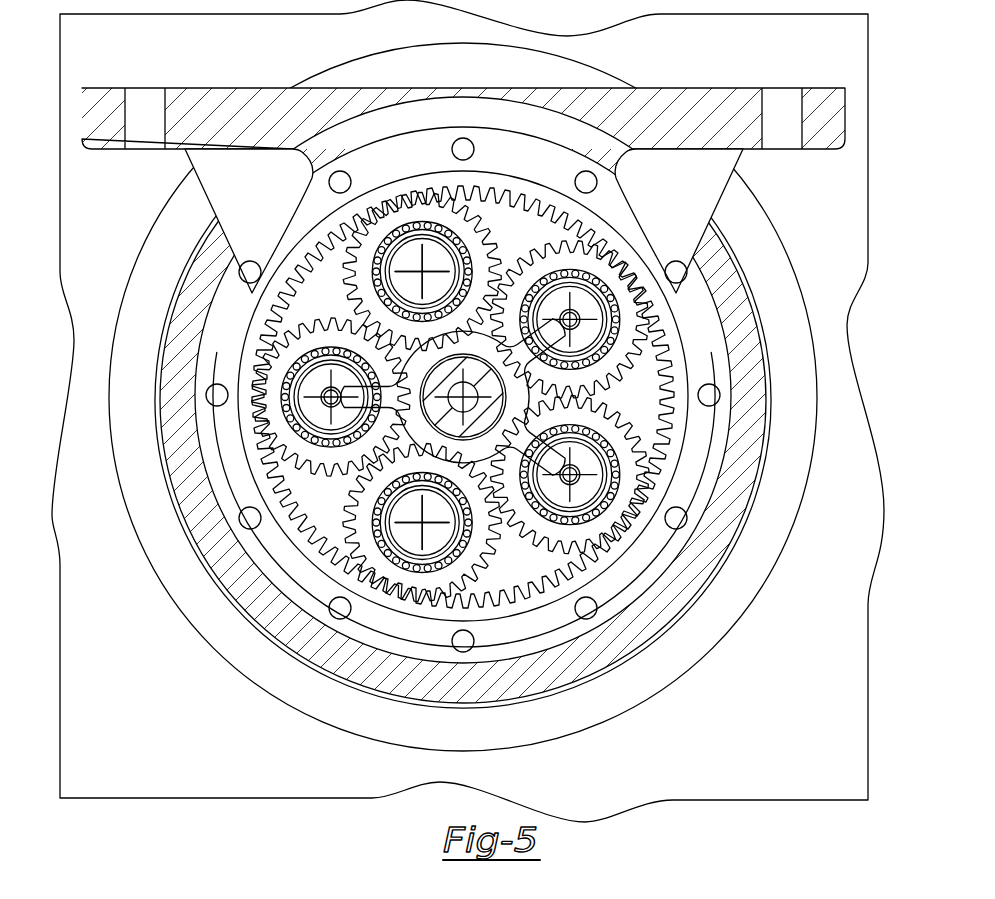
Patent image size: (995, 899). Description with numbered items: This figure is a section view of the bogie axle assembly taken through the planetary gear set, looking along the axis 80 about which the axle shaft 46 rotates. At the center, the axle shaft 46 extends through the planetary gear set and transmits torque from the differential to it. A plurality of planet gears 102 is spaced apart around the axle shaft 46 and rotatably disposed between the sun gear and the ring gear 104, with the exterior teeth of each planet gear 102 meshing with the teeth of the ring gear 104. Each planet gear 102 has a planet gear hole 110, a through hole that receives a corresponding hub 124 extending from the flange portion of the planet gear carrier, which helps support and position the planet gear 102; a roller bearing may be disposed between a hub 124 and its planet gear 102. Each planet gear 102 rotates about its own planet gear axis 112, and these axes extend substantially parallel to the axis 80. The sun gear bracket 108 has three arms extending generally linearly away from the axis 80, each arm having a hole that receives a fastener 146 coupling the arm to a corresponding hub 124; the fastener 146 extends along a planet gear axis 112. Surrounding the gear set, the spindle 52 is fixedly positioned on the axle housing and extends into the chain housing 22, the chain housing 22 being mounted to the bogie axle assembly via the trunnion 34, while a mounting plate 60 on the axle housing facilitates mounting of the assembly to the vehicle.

The chain housing 22 is at (173, 699).
The trunnion 34 is at (463, 442).
The axle shaft 46 is at (429, 401).
The spindle 52 is at (322, 163).
The mounting plate 60 is at (682, 88).
The axis 80 is at (451, 409).
The planet gear 102 is at (540, 249).
The ring gear 104 is at (252, 326).
The sun gear bracket 108 is at (528, 445).
The planet gear hole 110 is at (421, 269).
The planet gear axis 112 is at (331, 396).
The hub 124 is at (423, 273).
The fastener 146 is at (572, 318).